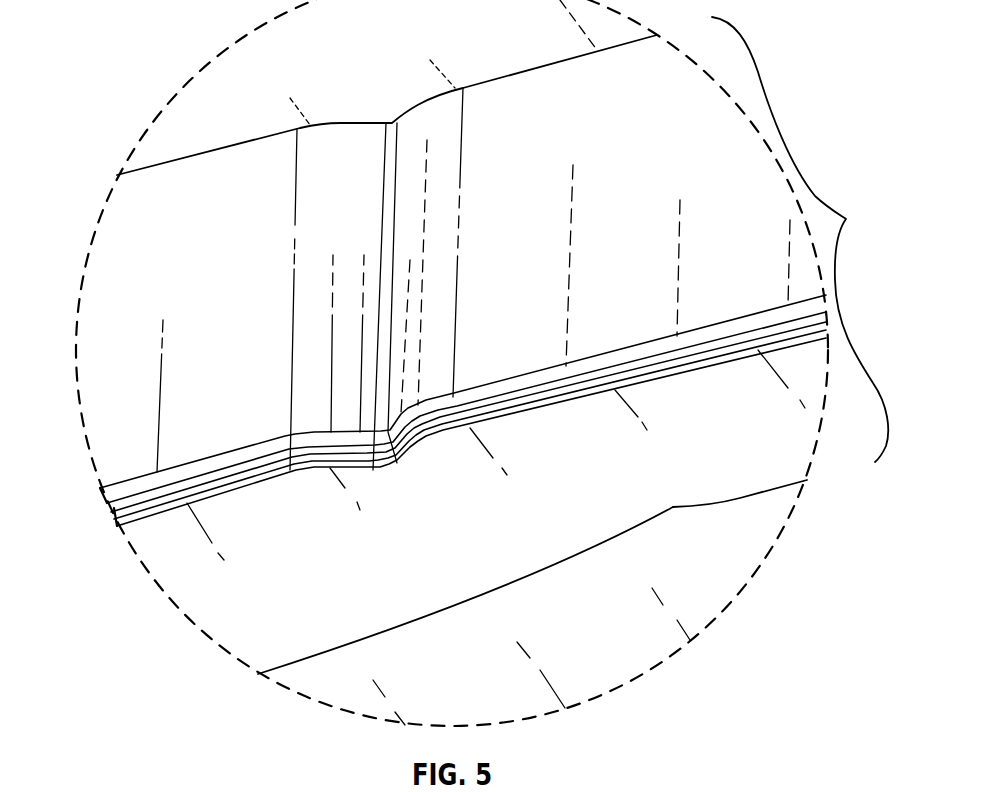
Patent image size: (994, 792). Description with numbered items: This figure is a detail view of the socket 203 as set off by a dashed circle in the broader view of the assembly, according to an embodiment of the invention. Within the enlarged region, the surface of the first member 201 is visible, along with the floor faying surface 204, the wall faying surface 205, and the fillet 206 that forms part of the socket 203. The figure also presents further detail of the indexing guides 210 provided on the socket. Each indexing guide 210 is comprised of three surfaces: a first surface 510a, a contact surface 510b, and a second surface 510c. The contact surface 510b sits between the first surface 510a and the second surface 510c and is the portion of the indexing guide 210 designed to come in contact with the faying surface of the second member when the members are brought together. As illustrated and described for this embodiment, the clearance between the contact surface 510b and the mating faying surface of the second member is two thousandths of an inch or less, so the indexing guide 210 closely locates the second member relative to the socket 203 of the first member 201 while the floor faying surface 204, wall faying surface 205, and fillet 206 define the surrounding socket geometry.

The first member 201 is at (325, 689).
The socket 203 is at (852, 218).
The floor faying surface 204 is at (182, 595).
The wall faying surface 205 is at (95, 308).
The fillet 206 is at (115, 508).
The indexing guide 210 is at (663, 526).
The first surface 510a is at (331, 152).
The contact surface 510b is at (403, 107).
The second surface 510c is at (445, 122).